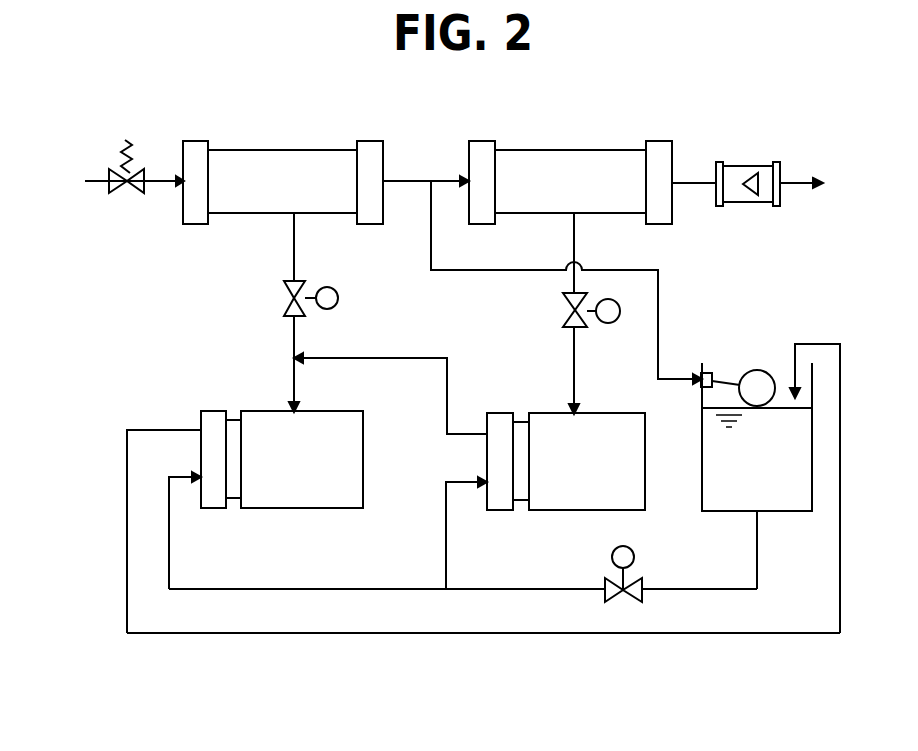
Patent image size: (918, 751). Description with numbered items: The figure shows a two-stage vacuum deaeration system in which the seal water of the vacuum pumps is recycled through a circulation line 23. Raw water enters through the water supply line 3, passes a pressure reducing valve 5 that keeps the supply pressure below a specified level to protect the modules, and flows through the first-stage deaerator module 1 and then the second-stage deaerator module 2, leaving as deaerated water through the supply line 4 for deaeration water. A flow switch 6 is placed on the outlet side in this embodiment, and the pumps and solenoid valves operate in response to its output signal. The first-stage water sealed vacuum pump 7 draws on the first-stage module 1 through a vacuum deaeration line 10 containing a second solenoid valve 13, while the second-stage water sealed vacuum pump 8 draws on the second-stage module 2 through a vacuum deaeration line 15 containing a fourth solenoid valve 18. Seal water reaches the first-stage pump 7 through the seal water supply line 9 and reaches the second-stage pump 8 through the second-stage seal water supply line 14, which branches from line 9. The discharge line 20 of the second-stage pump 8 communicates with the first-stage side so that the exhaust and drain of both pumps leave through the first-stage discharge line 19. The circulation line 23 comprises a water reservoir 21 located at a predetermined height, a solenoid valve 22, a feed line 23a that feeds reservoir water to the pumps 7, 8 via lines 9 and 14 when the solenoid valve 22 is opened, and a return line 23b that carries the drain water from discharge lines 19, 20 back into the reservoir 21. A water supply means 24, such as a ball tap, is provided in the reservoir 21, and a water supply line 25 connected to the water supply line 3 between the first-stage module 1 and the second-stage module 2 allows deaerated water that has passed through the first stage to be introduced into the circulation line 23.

The first-stage deaerator module 1 is at (290, 136).
The second-stage deaerator module 2 is at (580, 136).
The water supply line 3 is at (91, 178).
The supply line for deaeration water 4 is at (797, 181).
The pressure reducing valve 5 is at (139, 168).
The flow switch 6 is at (749, 165).
The first-stage water sealed vacuum pump 7 is at (325, 522).
The second-stage water sealed vacuum pump 8 is at (644, 524).
The seal water supply line 9 is at (170, 528).
The vacuum deaeration line 10 is at (294, 244).
The second solenoid valve 13 is at (339, 298).
The second-stage seal water supply line 14 is at (446, 520).
The vacuum deaeration line 15 is at (576, 240).
The fourth solenoid valve 18 is at (611, 323).
The first-stage discharge line 19 is at (149, 429).
The discharge line 20 is at (448, 368).
The water reservoir 21 is at (813, 457).
The solenoid valve 22 is at (611, 557).
The circulation line 23 is at (398, 600).
The feed line 23a is at (281, 588).
The return line 23b is at (243, 635).
The water supply means 24 is at (733, 382).
The water supply line 25 is at (500, 272).